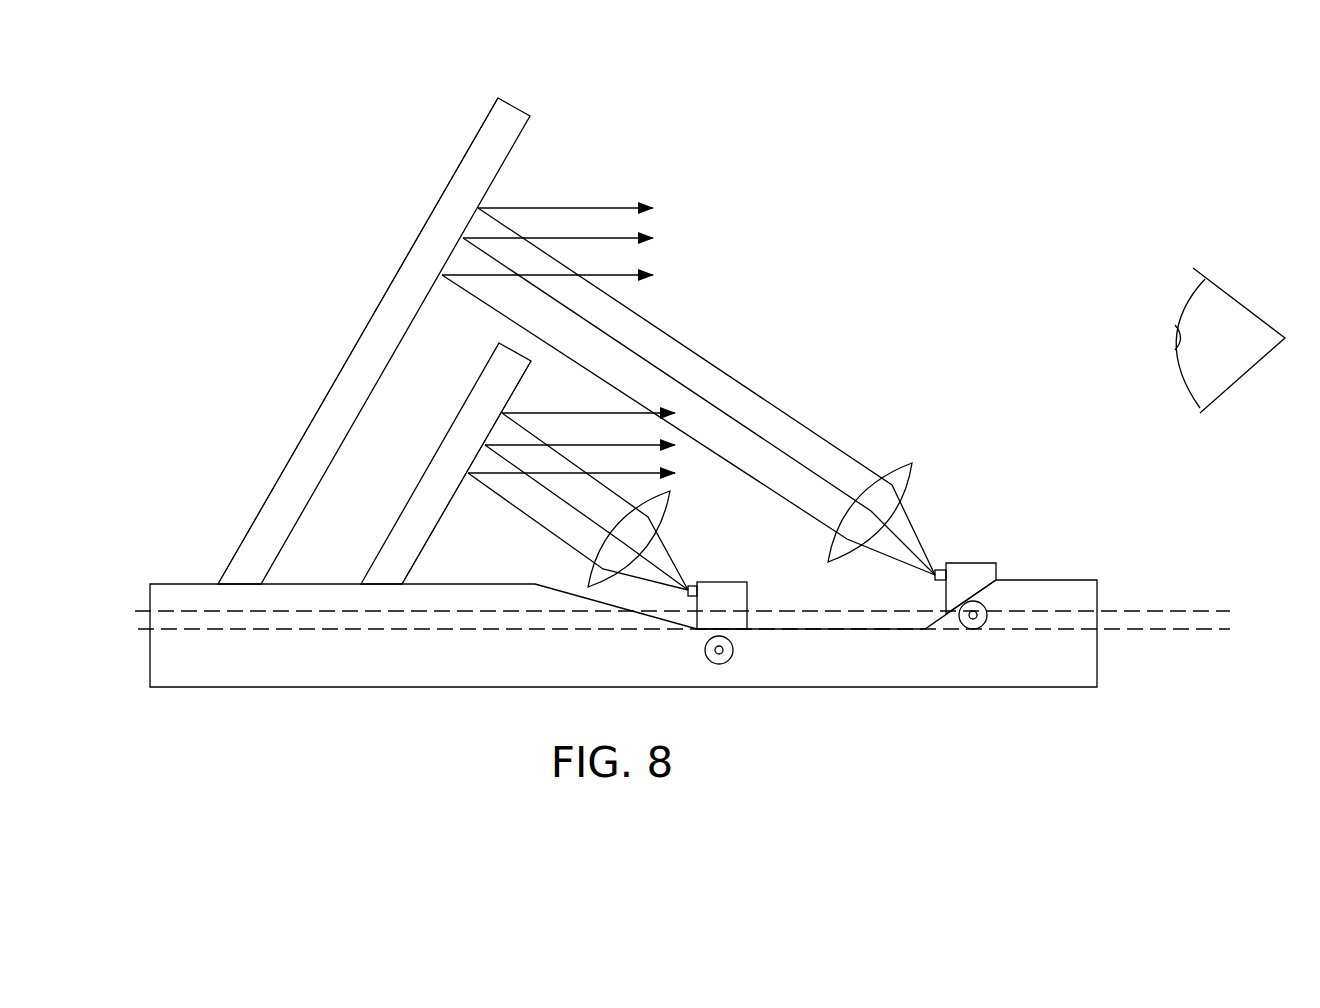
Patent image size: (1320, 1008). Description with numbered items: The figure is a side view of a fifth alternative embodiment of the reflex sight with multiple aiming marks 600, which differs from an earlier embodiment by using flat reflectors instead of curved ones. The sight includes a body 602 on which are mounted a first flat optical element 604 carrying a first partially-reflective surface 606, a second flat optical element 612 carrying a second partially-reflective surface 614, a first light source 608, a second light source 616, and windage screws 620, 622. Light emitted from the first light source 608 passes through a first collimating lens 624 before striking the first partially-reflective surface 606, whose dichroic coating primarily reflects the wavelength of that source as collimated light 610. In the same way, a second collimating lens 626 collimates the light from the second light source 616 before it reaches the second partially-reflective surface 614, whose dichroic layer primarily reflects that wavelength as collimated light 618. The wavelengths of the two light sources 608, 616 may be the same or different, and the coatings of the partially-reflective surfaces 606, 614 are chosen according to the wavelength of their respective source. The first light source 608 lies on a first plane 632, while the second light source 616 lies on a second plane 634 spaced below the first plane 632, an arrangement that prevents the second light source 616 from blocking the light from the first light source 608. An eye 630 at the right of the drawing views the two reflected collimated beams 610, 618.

The reflex sight with multiple aiming marks 600 is at (953, 125).
The body 602 is at (803, 687).
The first (flat) optical element 604 is at (513, 104).
The first partially-reflective surface 606 is at (344, 440).
The first light source 608 is at (975, 563).
The collimated light 610 is at (570, 207).
The second (flat) optical element 612 is at (487, 364).
The second partially-reflective surface 614 is at (427, 542).
The second light source 616 is at (724, 582).
The collimated light 618 is at (552, 412).
The windage screw 620 is at (735, 651).
The windage screw 622 is at (986, 608).
The first collimating lens 624 is at (910, 470).
The second collimating lens 626 is at (670, 500).
The user eye 630 is at (1222, 287).
The first plane 632 is at (1172, 607).
The second plane 634 is at (1148, 634).